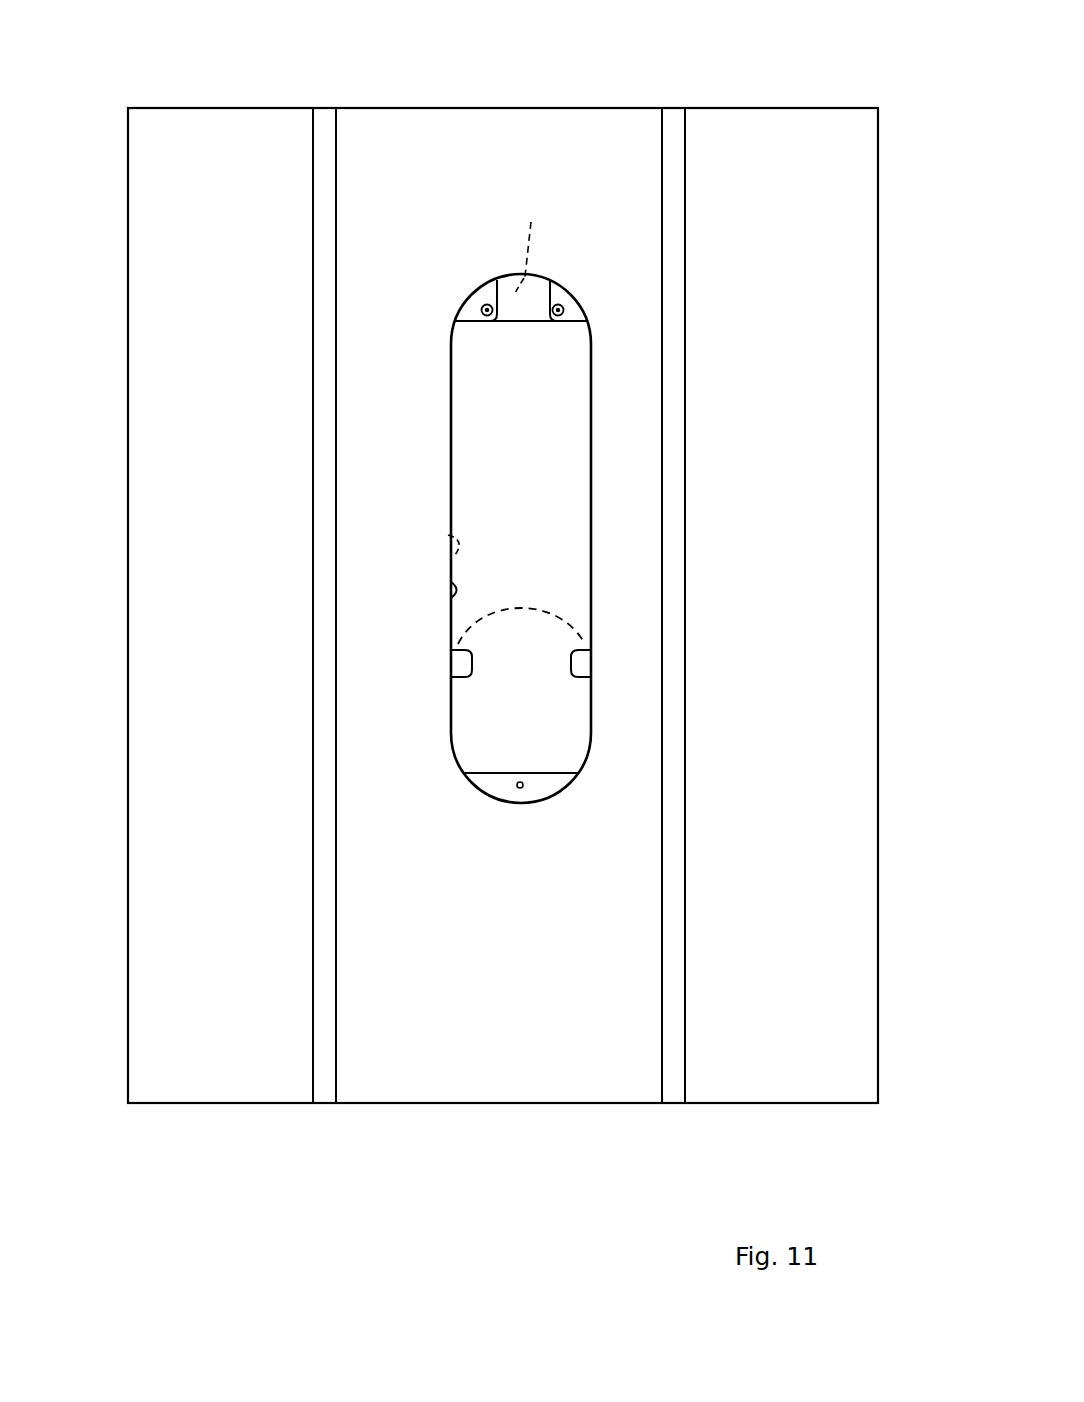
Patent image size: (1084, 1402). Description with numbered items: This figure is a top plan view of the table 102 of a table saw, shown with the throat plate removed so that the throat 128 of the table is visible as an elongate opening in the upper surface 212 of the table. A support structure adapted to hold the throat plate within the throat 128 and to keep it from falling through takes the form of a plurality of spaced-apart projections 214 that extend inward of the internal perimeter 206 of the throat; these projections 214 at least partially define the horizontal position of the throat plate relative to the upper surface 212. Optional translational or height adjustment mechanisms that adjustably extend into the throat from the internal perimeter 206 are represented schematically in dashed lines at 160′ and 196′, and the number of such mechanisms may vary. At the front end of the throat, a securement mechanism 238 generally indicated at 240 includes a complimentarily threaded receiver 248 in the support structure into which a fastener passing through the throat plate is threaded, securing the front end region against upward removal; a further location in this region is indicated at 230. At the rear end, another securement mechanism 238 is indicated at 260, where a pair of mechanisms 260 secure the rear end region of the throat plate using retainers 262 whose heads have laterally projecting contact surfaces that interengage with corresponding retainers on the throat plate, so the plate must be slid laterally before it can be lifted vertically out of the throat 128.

The table 102 is at (178, 105).
The upper surface 212 is at (792, 596).
The throat 128 is at (538, 512).
The projections 214 is at (500, 300).
The retainers 262 is at (480, 306).
The adjustment mechanism 160′ is at (402, 536).
The internal perimeter 206 is at (451, 584).
The adjustment mechanism 196′ is at (521, 621).
The securement mechanism 238 is at (542, 329).
The securement mechanism 260 is at (558, 332).
The lower cross member 230 is at (507, 785).
The securement mechanism 240 is at (519, 798).
The receiver 248 is at (526, 786).